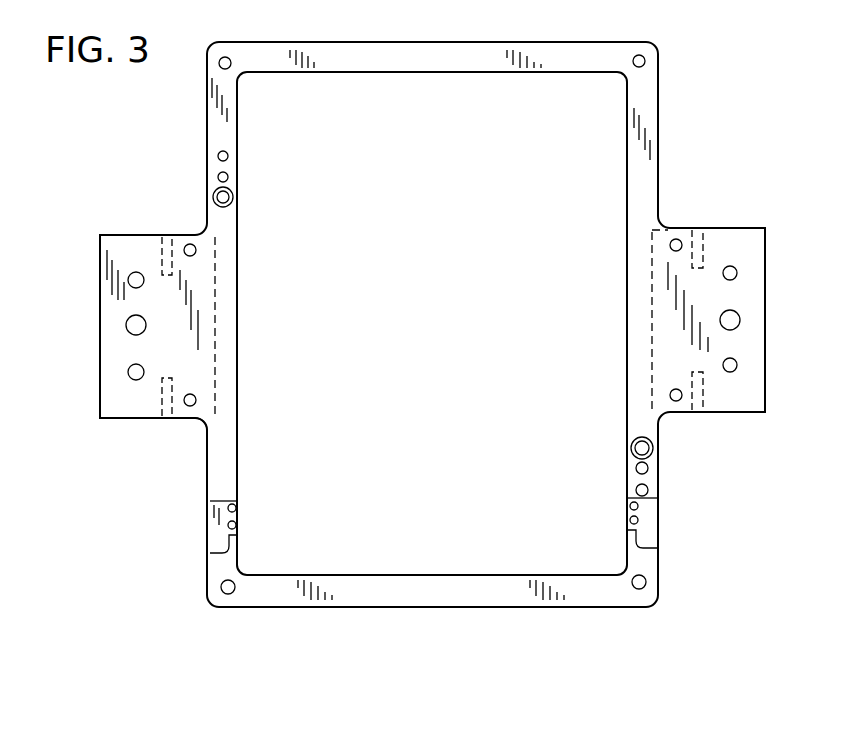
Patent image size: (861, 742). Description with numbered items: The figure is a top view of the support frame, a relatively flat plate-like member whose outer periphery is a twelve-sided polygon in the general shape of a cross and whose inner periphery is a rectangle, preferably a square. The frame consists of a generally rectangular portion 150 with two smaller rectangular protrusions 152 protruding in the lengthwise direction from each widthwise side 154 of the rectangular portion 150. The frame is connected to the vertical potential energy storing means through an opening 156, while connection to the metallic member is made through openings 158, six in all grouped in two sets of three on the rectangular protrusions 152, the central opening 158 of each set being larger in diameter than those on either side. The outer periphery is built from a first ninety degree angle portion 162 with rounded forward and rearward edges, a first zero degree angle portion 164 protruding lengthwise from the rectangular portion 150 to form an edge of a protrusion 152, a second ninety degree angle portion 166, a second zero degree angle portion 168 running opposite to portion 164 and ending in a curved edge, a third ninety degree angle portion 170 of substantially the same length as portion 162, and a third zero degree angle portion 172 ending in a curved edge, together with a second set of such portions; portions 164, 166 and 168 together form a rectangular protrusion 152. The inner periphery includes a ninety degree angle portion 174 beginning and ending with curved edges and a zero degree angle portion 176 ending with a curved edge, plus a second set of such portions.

The rectangular portion 150 is at (280, 611).
The rectangular protrusion 152 is at (108, 422).
The widthwise side 154 is at (648, 160).
The opening 156 is at (222, 593).
The openings 158 is at (144, 280).
The first 90° angle portion 162 is at (205, 448).
The first 0° angle portion 164 is at (165, 420).
The second 90° angle portion 166 is at (100, 315).
The second 0° angle portion 168 is at (125, 233).
The third 90° angle portion 170 is at (205, 140).
The third 0° angle portion 172 is at (394, 42).
The 90° angle portion 174 is at (240, 445).
The 0° angle portion 176 is at (383, 74).